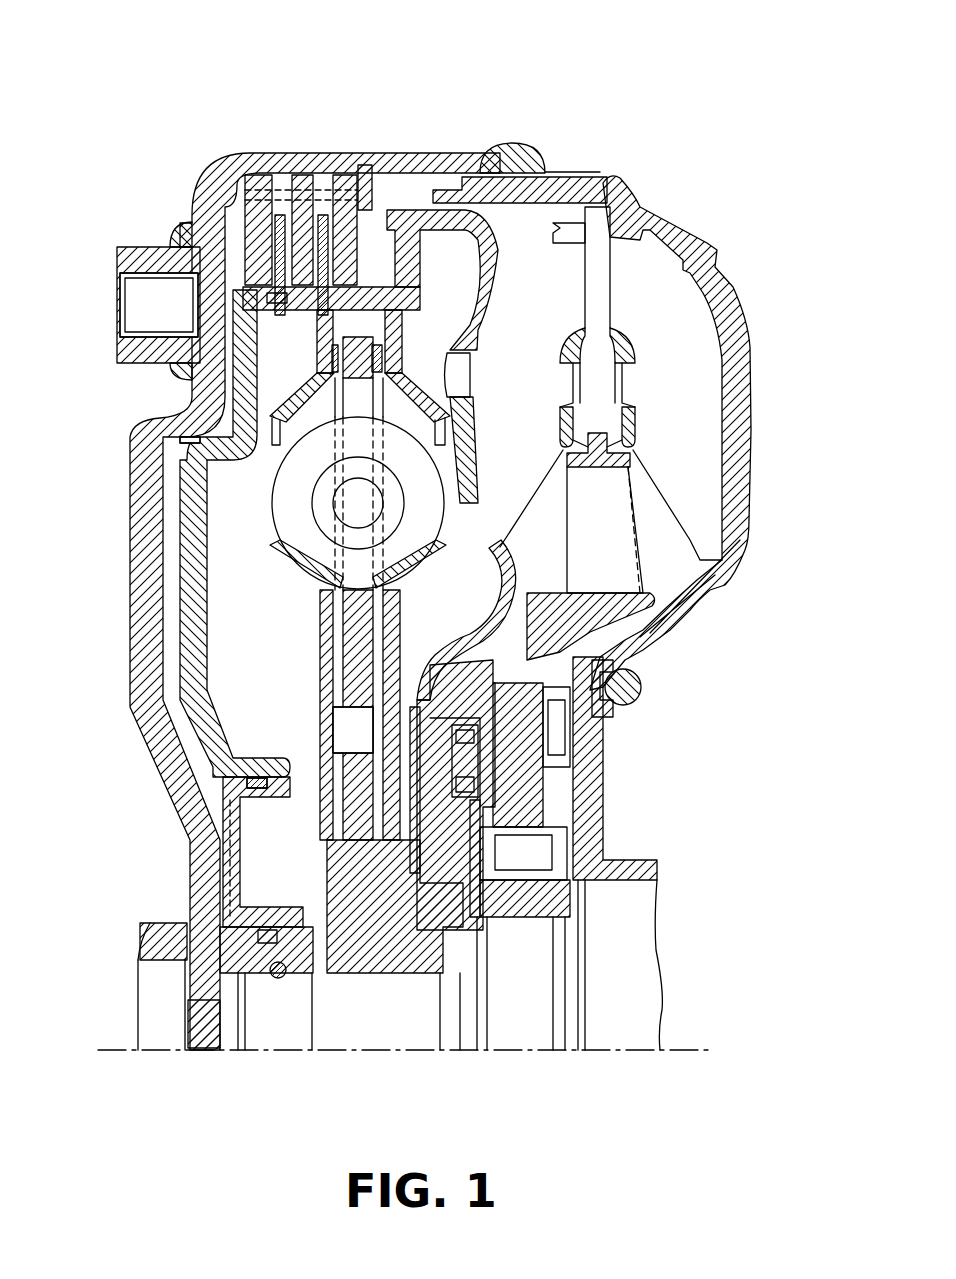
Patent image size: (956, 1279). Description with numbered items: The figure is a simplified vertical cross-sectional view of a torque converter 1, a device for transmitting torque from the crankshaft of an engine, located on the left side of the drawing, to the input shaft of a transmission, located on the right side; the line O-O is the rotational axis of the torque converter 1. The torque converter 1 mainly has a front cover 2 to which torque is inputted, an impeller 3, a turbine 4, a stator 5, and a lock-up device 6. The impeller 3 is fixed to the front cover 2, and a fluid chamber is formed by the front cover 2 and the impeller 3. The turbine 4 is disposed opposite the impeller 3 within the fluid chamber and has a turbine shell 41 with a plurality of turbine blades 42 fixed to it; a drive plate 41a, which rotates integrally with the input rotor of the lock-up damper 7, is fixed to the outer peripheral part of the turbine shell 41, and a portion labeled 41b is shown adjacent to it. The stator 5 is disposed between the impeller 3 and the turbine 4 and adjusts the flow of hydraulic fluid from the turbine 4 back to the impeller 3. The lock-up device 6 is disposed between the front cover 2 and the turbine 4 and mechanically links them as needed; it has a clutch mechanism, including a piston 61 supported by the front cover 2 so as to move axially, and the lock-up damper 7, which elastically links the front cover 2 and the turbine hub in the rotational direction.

The torque converter 1 is at (660, 120).
The front cover 2 is at (198, 170).
The impeller 3 is at (732, 287).
The turbine 4 is at (561, 220).
The turbine shell 41 is at (491, 208).
The drive plate 41a is at (512, 250).
The tab portion 41b is at (437, 175).
The turbine blades 42 is at (574, 262).
The stator 5 is at (650, 530).
The lock-up device 6 is at (384, 195).
The piston 61 is at (176, 492).
The lock-up damper 7 is at (258, 525).